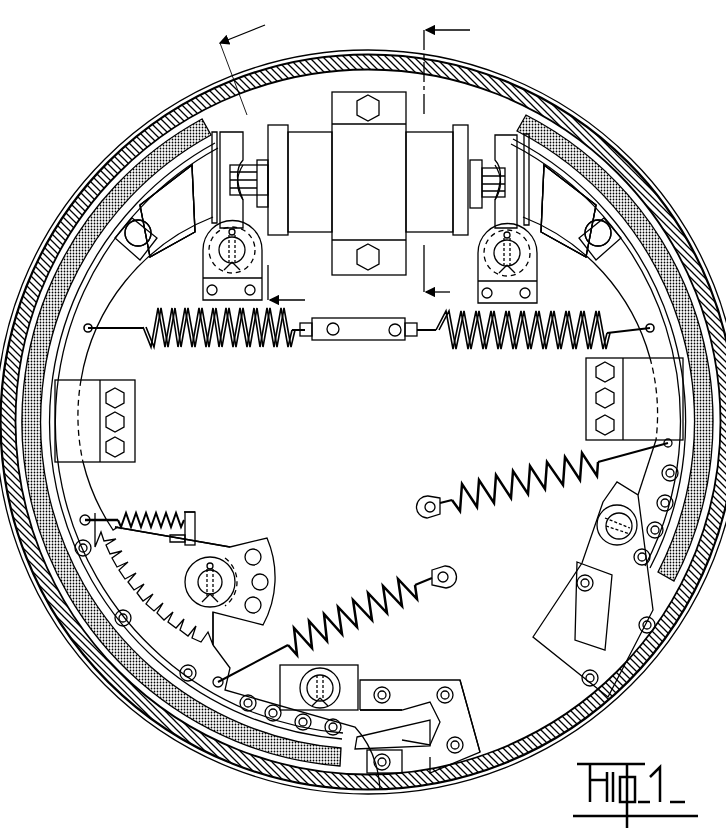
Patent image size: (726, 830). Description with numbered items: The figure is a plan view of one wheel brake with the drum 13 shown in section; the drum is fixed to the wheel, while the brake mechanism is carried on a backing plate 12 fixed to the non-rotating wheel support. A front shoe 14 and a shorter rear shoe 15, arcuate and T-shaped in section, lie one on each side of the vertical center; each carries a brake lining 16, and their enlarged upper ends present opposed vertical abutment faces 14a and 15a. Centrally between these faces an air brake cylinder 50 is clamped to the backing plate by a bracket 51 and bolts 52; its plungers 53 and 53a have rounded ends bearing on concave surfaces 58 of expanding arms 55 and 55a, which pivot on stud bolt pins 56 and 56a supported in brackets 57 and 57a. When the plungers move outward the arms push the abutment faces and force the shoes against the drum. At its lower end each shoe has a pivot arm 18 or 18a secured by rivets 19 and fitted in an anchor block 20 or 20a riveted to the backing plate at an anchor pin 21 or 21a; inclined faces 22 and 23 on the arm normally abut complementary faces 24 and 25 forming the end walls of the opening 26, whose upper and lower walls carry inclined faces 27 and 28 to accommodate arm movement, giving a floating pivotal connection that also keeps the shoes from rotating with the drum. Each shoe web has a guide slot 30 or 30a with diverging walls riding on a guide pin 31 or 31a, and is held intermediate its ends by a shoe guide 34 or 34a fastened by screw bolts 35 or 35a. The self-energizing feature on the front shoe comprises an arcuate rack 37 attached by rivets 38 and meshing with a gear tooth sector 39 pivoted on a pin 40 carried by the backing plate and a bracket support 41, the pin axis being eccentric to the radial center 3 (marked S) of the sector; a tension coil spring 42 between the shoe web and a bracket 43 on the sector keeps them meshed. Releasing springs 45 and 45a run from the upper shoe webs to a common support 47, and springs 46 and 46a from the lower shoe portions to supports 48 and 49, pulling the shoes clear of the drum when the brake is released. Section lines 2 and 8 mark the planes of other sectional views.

The section line 2- 2 is at (268, 154).
The radial center S 3 is at (218, 521).
The section line 8- 8 is at (454, 154).
The brake backing plate 12 is at (536, 710).
The drum 13 is at (612, 725).
The front shoe 14 is at (75, 495).
The vertical abutment face 14a is at (210, 190).
The rear shoe 15 is at (605, 348).
The vertical abutment face 15a is at (546, 183).
The brake lining 16 is at (68, 263).
The pivot arm 18 is at (352, 735).
The pivot arm 18a is at (612, 598).
The rivets 19 is at (273, 705).
The anchor block 20 is at (358, 672).
The anchor block 20a is at (592, 567).
The anchor pin 21 is at (328, 678).
The anchor pin 21a is at (598, 540).
The inclined face 22 is at (430, 710).
The inclined face 23 is at (400, 735).
The complementary face 24 is at (462, 705).
The complementary face 25 is at (470, 732).
The opening 26 is at (438, 680).
The inclined face 27 is at (395, 700).
The inclined face 28 is at (385, 774).
The guide slot 30 is at (150, 200).
The guide slot 30a is at (568, 211).
The guide pin 31 is at (137, 236).
The guide pin 31a is at (600, 240).
The shoe guide 34 is at (90, 435).
The shoe guide 34a is at (634, 384).
The screw bolts 35 is at (124, 398).
The screw bolts 35a is at (598, 412).
The arcuate rack 37 is at (120, 586).
The rivets 38 is at (186, 666).
The gear tooth sector 39 is at (172, 546).
The pin 40 is at (198, 580).
The bracket support 41 is at (238, 545).
The tension coil spring 42 is at (146, 514).
The bracket 43 is at (197, 518).
The releasing spring 45 is at (230, 342).
The releasing spring 45a is at (512, 350).
The releasing spring 46 is at (330, 604).
The releasing spring 46a is at (510, 470).
The common support 47 is at (352, 340).
The support 48 is at (436, 570).
The support 49 is at (420, 500).
The air brake cylinder 50 is at (310, 140).
The bracket 51 is at (392, 156).
The bolts 52 is at (368, 110).
The plunger 53 is at (245, 182).
The plunger 53a is at (490, 182).
The expanding arm 55 is at (232, 133).
The expanding arm 55a is at (507, 135).
The stud bolt pin 56 is at (240, 250).
The stud bolt pin 56a is at (498, 254).
The bracket 57 is at (262, 280).
The bracket 57a is at (535, 285).
The concave surfaces 58 is at (250, 152).